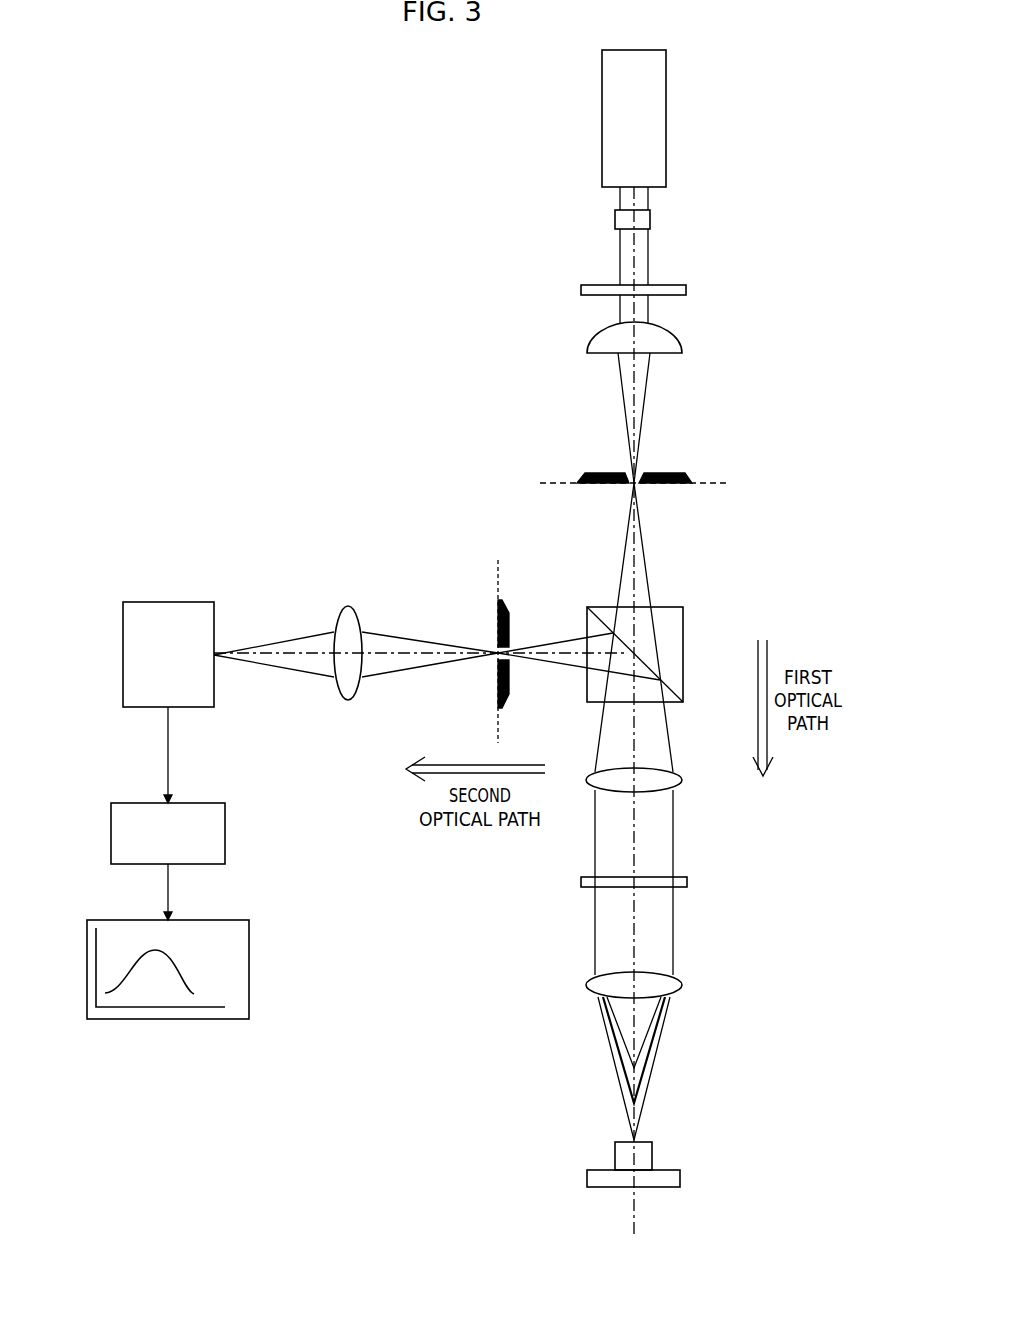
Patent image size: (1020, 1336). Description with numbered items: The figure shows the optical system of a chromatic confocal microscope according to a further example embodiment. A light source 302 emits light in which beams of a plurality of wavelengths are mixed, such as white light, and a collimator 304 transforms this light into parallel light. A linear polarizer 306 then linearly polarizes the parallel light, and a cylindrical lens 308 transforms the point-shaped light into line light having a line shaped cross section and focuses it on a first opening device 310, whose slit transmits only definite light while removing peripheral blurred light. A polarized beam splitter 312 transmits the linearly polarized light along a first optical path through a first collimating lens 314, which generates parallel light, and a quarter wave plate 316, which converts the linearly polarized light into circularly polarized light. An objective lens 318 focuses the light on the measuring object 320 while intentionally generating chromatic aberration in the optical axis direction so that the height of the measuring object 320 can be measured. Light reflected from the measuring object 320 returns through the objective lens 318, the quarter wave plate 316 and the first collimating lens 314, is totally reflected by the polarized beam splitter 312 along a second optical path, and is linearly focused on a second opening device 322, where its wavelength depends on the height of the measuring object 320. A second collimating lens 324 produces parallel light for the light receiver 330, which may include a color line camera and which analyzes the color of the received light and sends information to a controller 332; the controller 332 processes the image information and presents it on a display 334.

The light source 302 is at (666, 118).
The collimator 304 is at (650, 219).
The linear polarizer 306 is at (686, 290).
The cylindrical lens 308 is at (678, 344).
The first opening device 310 is at (672, 476).
The polarized beam splitter 312 is at (683, 653).
The first collimating lens 314 is at (682, 780).
The quarter wave plate 316 is at (687, 882).
The objective lens 318 is at (682, 985).
The measuring object 320 is at (680, 1178).
The second opening device 322 is at (509, 690).
The second collimating lens 324 is at (348, 700).
The light receiver 330 is at (168, 602).
The controller 332 is at (111, 833).
The display 334 is at (166, 1019).